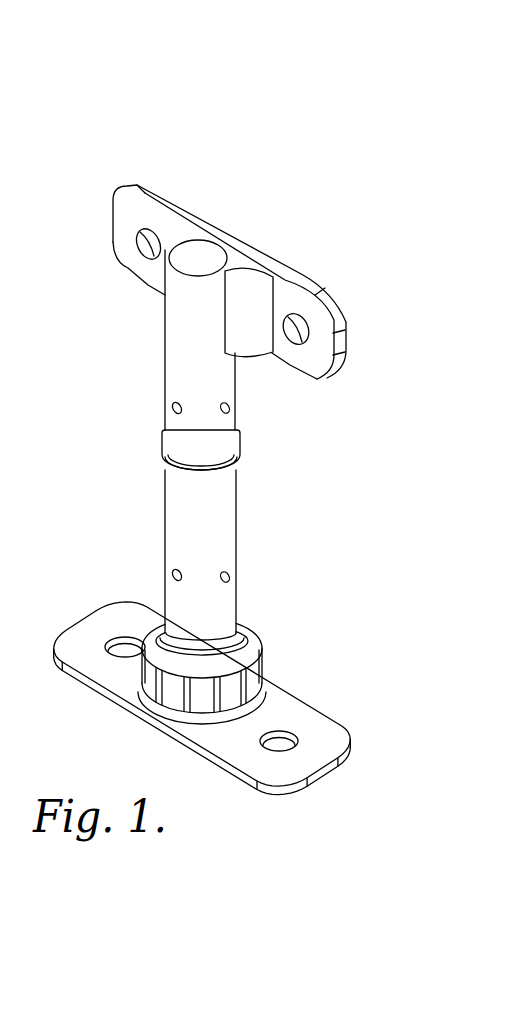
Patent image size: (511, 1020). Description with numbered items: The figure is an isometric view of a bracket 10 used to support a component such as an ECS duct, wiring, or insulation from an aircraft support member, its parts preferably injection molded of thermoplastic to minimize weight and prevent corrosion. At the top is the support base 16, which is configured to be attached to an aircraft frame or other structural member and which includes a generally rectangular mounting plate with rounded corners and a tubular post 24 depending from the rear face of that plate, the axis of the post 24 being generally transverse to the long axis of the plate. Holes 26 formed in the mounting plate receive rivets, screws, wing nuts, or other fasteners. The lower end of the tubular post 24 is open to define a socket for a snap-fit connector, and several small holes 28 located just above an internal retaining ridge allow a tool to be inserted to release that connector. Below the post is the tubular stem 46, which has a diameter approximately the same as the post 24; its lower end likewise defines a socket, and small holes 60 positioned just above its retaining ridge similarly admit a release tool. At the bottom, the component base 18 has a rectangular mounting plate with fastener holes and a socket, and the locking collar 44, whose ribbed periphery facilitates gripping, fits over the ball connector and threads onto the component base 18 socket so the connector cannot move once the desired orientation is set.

The bracket 10 is at (307, 210).
The support base 16 is at (160, 190).
The component base 18 is at (350, 725).
The tubular post 24 is at (176, 343).
The holes 26 is at (140, 243).
The small holes 28 is at (171, 408).
The locking collar 44 is at (265, 638).
The stem 46 is at (240, 508).
The small holes 60 is at (172, 575).